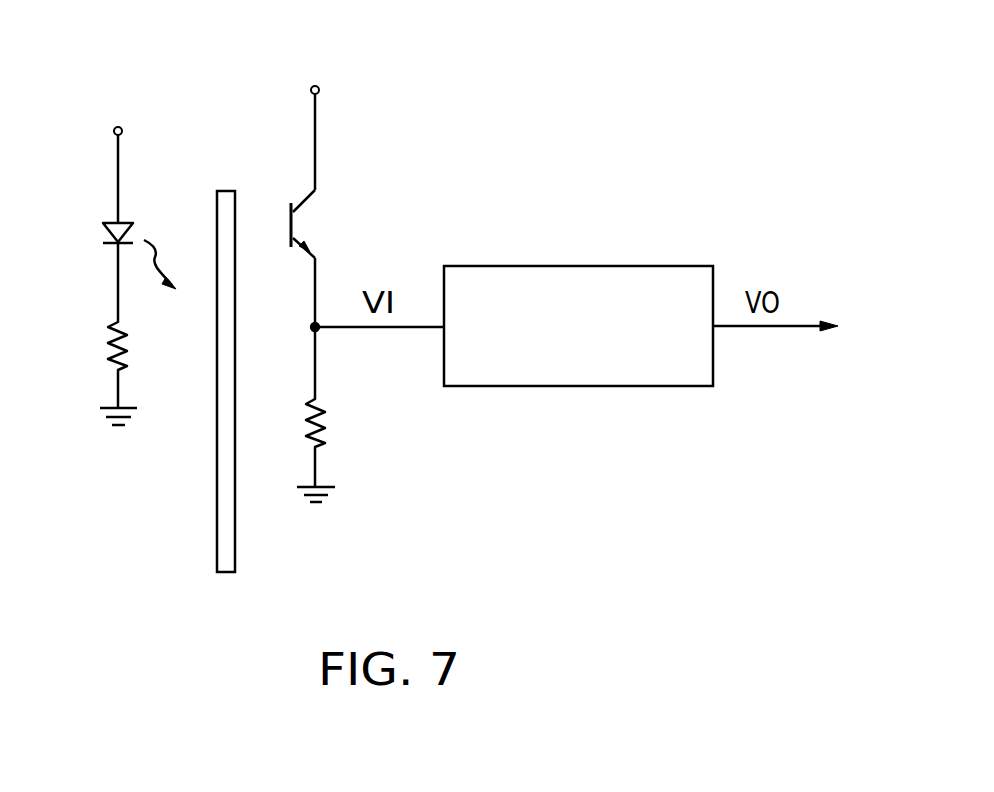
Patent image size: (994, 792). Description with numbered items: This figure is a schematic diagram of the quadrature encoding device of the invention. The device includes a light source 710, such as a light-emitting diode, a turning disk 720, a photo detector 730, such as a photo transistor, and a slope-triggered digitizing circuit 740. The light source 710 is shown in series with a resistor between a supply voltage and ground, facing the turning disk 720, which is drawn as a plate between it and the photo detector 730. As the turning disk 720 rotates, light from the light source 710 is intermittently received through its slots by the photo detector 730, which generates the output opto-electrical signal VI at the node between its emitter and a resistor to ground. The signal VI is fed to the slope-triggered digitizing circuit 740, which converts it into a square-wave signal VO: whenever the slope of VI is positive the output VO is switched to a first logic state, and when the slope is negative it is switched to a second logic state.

The light source 710 is at (103, 240).
The turning disk 720 is at (172, 381).
The photo detector 730 is at (308, 220).
The slope-triggered digitizing circuit 740 is at (503, 266).